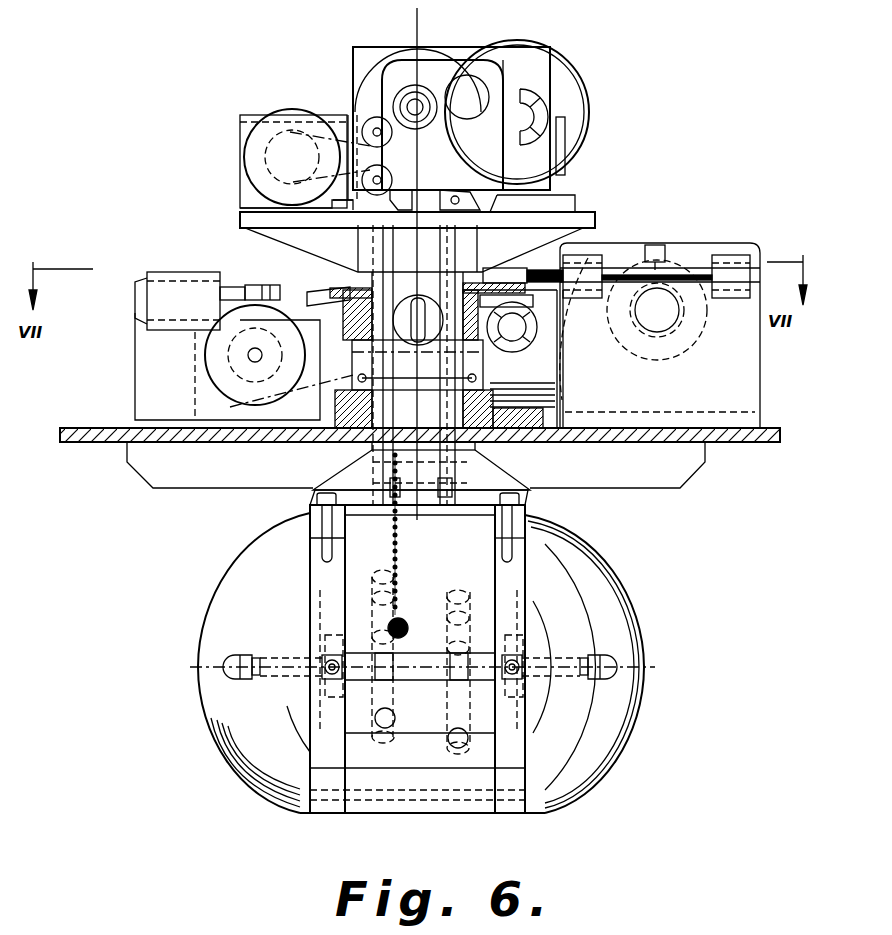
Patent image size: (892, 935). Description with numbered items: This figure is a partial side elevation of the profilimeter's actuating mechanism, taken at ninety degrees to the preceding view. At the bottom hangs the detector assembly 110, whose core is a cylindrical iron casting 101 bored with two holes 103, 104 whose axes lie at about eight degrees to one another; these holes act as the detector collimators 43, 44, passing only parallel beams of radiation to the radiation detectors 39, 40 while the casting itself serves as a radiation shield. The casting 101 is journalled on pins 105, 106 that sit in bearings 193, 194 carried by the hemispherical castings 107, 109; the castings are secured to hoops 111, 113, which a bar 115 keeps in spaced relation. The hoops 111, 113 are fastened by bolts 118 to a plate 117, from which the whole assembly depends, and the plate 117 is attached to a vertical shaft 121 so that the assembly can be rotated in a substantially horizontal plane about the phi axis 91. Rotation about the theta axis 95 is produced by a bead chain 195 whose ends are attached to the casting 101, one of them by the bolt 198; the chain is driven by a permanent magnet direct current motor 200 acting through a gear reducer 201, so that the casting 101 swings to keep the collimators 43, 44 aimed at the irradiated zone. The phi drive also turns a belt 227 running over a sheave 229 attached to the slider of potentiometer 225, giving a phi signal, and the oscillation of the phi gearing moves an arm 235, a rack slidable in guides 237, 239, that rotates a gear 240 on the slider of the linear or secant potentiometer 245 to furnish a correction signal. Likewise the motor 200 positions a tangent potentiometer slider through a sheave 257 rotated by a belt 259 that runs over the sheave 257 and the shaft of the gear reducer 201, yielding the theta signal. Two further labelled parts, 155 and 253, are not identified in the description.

The phi axis 91 is at (418, 18).
The gear reducer 201 is at (482, 79).
The motor 200 is at (594, 116).
The drive housing 253 is at (232, 165).
The sheave 257 is at (291, 130).
The belt 259 is at (343, 125).
The motor 155 is at (205, 266).
The belt 227 is at (290, 306).
The potentiometer 225 is at (195, 355).
The sheave 229 is at (228, 393).
The vertical shaft 121 is at (402, 417).
The linear or secant potentiometer 245 is at (668, 361).
The gear 240 is at (680, 315).
The arm 235 is at (618, 272).
The guide 237 is at (578, 266).
The guide 239 is at (722, 262).
The detector assembly 110 is at (213, 578).
The hemispherical casting 107 is at (270, 547).
The hemispherical casting 109 is at (586, 560).
The theta axis 95 is at (642, 664).
The plate 117 is at (478, 505).
The bolts 118 is at (522, 497).
The hoop 111 is at (300, 806).
The hoop 113 is at (520, 782).
The cylindrical iron casting 101 is at (470, 800).
The bar 115 is at (412, 675).
The bearing 193 is at (322, 660).
The bearing 194 is at (520, 650).
The pin 105 is at (335, 656).
The pin 106 is at (512, 656).
The radiation detector 39 is at (372, 630).
The radiation detector 40 is at (443, 632).
The collimator 43 is at (395, 712).
The collimator 44 is at (462, 742).
The hole 103 is at (392, 728).
The hole 104 is at (450, 745).
The bead chain 195 is at (400, 527).
The bolt 198 is at (400, 617).